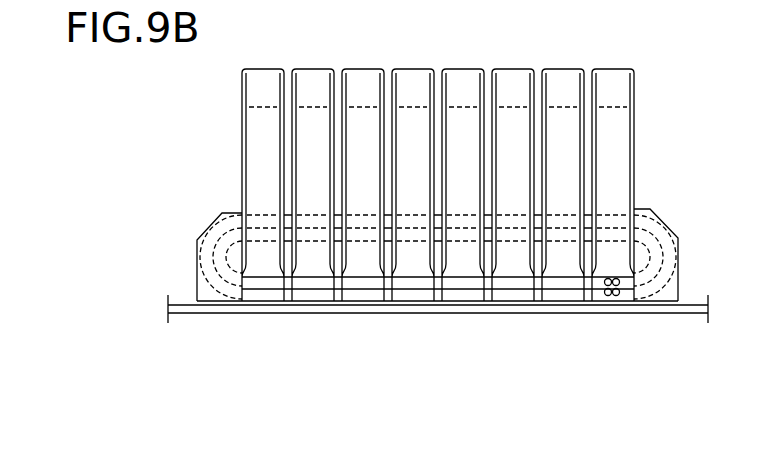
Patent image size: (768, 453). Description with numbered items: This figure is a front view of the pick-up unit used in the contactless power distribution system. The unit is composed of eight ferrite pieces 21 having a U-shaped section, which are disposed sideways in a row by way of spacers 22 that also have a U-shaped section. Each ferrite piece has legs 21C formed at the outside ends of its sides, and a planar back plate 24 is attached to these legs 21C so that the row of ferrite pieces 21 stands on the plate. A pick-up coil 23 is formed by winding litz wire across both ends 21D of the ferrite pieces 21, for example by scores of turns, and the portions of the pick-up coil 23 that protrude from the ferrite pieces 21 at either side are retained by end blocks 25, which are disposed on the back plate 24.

The ferrite piece 21 is at (608, 125).
The leg 21C is at (620, 298).
The end 21D is at (657, 224).
The spacer 22 is at (587, 299).
The pick-up coil 23 is at (680, 238).
The back plate 24 is at (683, 304).
The end block 25 is at (222, 213).